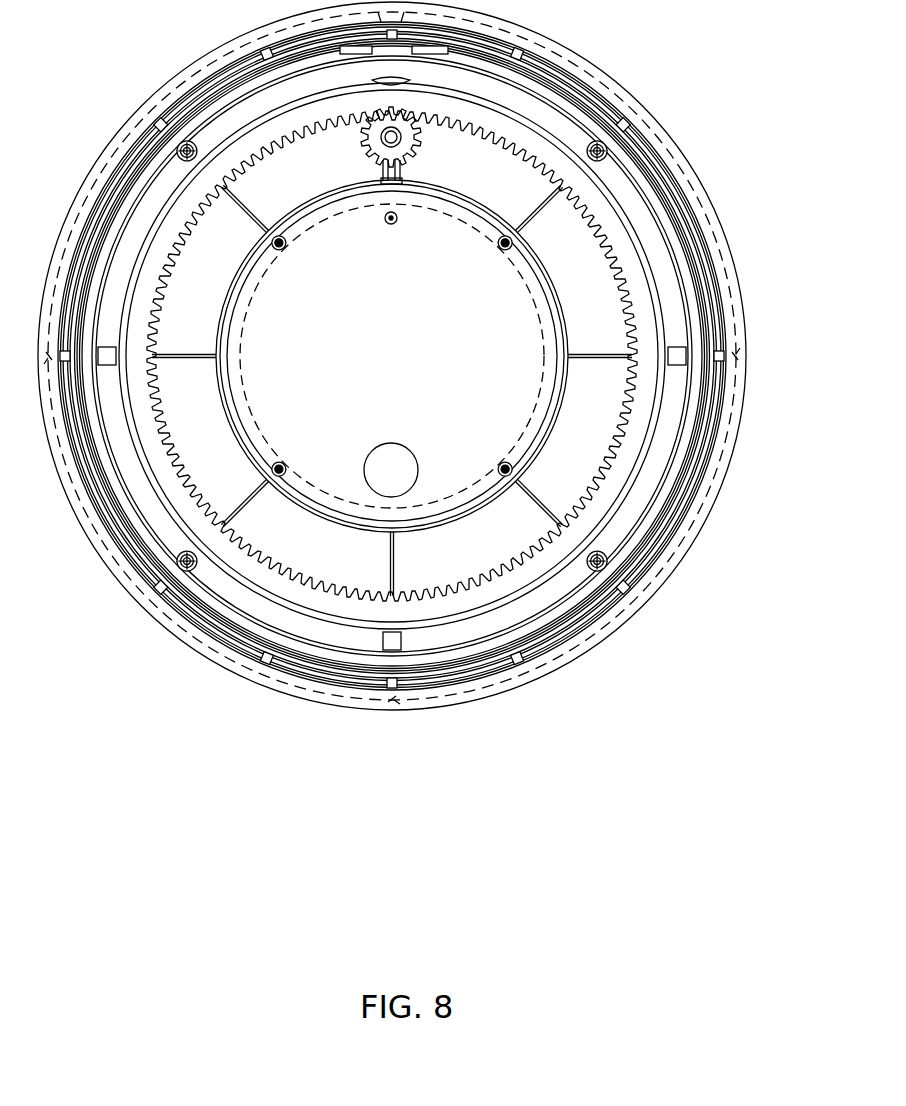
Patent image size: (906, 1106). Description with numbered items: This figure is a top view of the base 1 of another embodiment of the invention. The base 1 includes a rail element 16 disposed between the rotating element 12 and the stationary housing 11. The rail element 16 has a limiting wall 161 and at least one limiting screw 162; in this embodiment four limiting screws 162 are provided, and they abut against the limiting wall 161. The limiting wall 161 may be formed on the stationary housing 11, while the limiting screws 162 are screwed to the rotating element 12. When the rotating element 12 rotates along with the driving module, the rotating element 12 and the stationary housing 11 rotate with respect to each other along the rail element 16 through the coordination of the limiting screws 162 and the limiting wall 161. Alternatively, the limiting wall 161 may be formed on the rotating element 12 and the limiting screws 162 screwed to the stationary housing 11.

The base 1 is at (730, 150).
The rotating element 12 is at (714, 458).
The stationary housing 11 is at (262, 540).
The rail element 16 is at (392, 471).
The limiting wall 161 is at (452, 530).
The limiting screw 162 is at (507, 480).